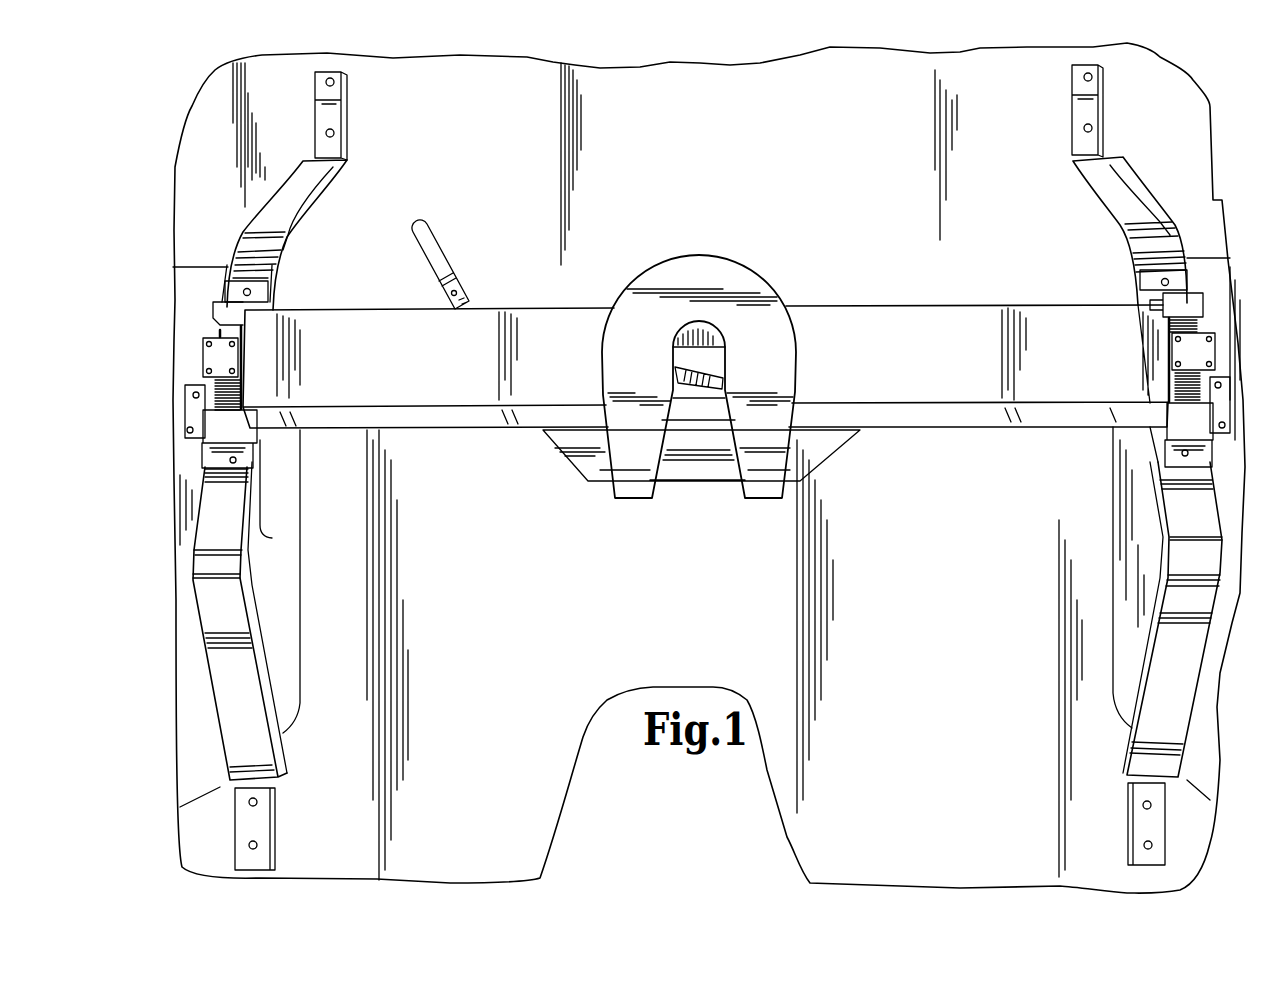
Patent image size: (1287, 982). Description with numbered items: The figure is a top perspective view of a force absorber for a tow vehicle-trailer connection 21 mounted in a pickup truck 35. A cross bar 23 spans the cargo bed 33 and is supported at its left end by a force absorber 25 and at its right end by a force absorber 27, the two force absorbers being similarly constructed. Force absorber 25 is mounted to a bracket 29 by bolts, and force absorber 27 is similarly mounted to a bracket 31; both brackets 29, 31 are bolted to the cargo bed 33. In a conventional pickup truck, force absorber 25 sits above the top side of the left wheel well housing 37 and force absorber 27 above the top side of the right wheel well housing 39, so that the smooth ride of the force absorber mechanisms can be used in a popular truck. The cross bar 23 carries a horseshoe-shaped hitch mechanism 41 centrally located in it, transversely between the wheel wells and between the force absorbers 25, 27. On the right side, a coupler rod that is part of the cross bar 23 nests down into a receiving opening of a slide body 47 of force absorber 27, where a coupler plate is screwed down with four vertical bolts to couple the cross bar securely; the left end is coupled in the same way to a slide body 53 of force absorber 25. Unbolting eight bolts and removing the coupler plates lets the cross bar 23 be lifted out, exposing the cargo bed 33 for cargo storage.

The force absorber for a tow vehicle-trailer connection 21 is at (866, 132).
The cross bar 23 is at (446, 375).
The force absorber 25 is at (216, 283).
The force absorber 27 is at (1197, 240).
The bracket 29 is at (221, 686).
The bracket 31 is at (1162, 678).
The cargo bed 33 is at (726, 603).
The pickup truck 35 is at (850, 588).
The left wheel well housing 37 is at (270, 538).
The right wheel well housing 39 is at (1155, 536).
The hitch mechanism 41 is at (737, 260).
The slide body 47 is at (1207, 352).
The slide body 53 is at (204, 357).